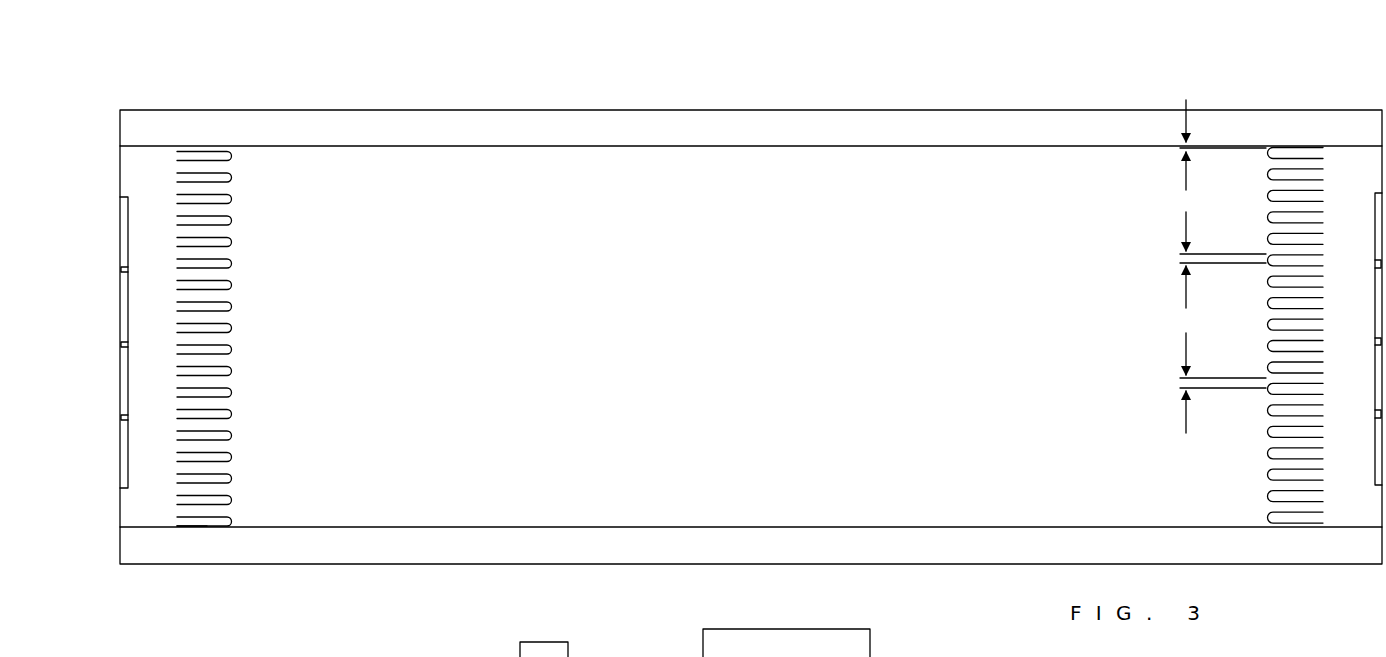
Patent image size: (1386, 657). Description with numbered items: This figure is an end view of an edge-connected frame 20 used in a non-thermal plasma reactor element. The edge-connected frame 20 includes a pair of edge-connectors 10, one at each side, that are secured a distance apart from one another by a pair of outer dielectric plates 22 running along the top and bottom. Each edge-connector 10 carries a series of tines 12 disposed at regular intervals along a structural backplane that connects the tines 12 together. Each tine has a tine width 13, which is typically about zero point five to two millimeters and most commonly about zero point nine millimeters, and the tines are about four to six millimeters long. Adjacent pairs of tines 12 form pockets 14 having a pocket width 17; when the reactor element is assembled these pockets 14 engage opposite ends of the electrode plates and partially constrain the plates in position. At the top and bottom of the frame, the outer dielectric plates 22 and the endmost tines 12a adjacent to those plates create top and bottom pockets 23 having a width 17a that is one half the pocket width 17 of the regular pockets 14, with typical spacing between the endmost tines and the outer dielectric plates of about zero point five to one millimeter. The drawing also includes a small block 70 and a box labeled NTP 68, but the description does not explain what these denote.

The edge-connected frame 20 is at (221, 79).
The outer dielectric plates 22 is at (491, 107).
The edge-connector 10 is at (157, 534).
The tines 12 is at (232, 443).
The pockets 14 is at (218, 203).
The endmost tines 12a is at (212, 526).
The top and bottom pockets 23 is at (207, 528).
The width of top and bottom pockets 17a is at (1182, 147).
The pocket width 17 is at (1180, 258).
The tine width 13 is at (1180, 383).
The sensor box 70 is at (562, 641).
The NTP unit 68 is at (850, 629).